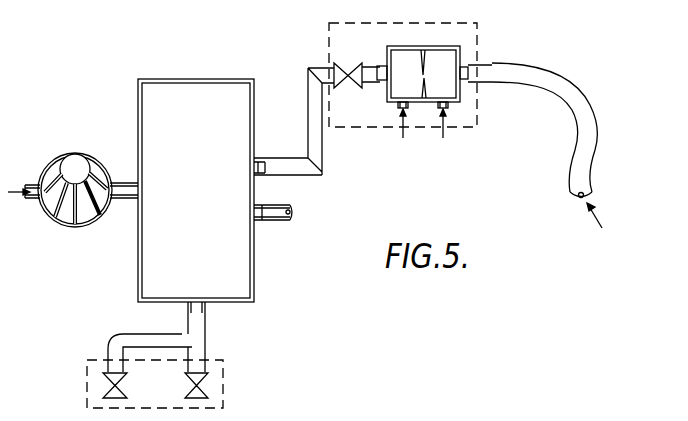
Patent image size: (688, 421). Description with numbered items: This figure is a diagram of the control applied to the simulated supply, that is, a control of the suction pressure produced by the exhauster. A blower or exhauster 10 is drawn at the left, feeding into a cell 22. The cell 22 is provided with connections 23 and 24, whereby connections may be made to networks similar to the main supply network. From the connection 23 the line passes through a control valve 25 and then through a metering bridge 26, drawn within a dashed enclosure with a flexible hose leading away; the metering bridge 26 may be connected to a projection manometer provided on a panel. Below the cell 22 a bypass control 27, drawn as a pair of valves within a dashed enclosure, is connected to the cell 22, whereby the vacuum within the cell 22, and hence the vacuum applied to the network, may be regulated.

The blower fan 10 is at (62, 156).
The cell 22 is at (212, 55).
The connection 23 is at (298, 142).
The connection 24 is at (278, 213).
The control valve 25 is at (368, 48).
The metering bridge 26 is at (437, 60).
The bypass control 27 is at (162, 368).